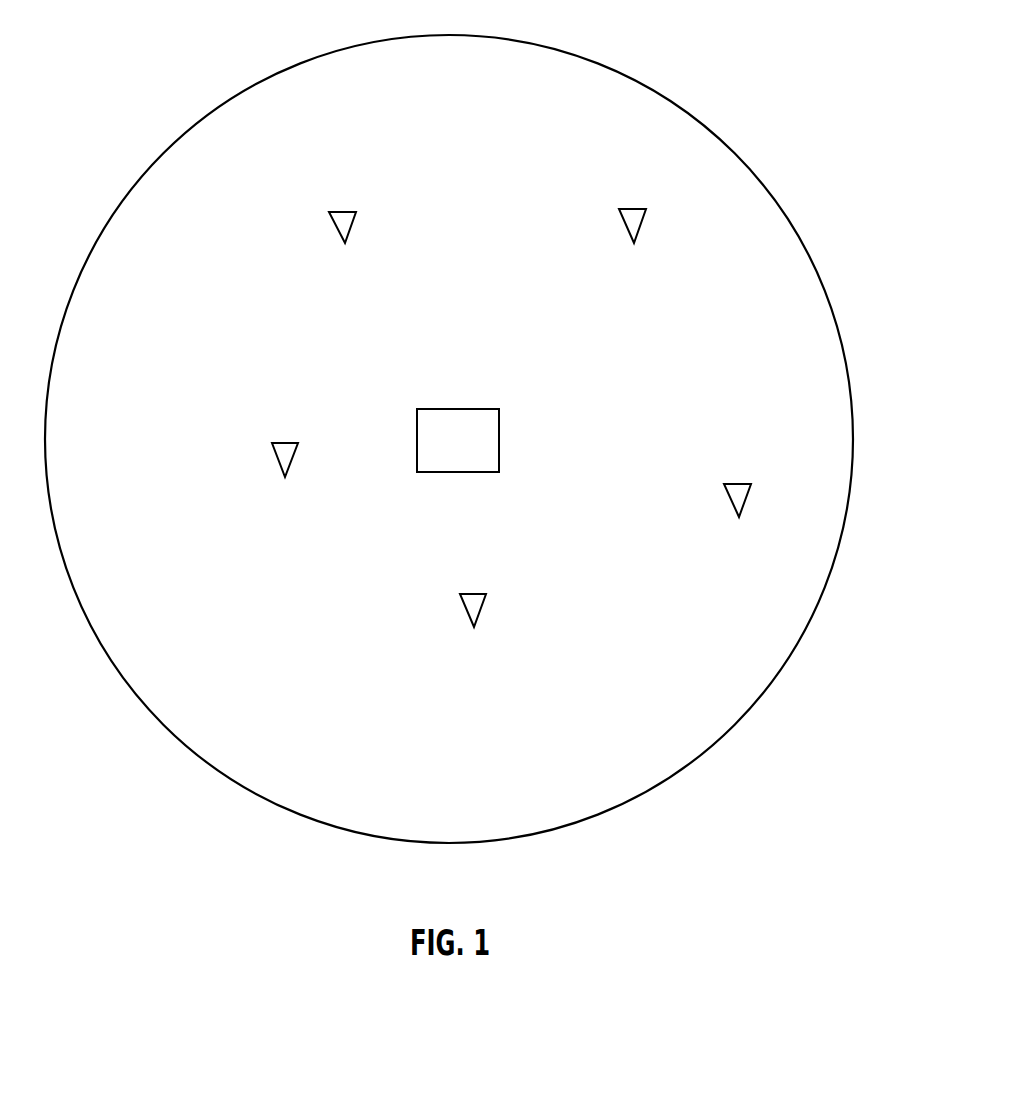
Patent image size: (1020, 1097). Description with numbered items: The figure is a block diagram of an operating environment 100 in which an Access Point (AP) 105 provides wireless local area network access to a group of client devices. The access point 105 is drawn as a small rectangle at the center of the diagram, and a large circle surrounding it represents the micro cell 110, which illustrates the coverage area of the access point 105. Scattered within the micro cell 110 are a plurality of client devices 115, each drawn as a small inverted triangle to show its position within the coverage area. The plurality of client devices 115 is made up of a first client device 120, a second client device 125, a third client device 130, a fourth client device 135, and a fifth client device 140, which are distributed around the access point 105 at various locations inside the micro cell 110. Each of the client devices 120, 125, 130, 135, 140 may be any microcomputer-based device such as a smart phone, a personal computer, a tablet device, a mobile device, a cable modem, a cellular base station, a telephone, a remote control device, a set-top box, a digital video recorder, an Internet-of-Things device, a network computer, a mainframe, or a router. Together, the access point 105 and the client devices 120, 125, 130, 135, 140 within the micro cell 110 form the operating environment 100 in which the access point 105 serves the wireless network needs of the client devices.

The operating environment 100 is at (728, 75).
The Access Point (AP) 105 is at (458, 409).
The micro cell 110 is at (742, 158).
The plurality of client devices 115 is at (417, 142).
The first client device 120 is at (283, 452).
The second client device 125 is at (470, 603).
The third client device 130 is at (736, 493).
The fourth client device 135 is at (630, 219).
The fifth client device 140 is at (340, 221).